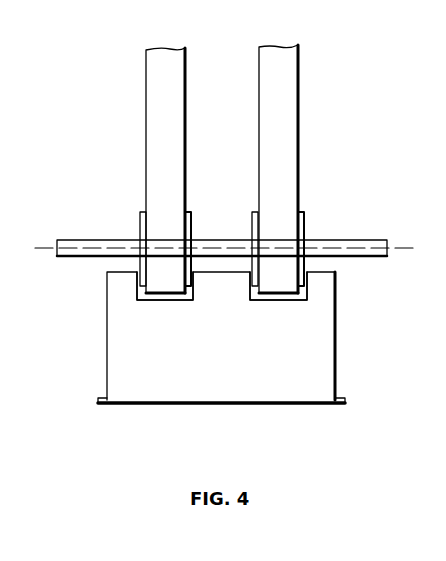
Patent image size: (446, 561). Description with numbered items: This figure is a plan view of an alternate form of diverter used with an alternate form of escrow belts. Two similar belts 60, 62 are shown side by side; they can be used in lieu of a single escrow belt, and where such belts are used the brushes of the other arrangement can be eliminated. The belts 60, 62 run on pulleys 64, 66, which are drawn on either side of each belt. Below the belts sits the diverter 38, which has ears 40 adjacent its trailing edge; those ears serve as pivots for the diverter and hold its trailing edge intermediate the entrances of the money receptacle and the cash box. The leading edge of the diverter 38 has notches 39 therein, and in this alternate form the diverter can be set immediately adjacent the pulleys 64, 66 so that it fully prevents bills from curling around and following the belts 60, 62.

The diverter 38 is at (331, 342).
The notches 39 is at (135, 289).
The ears 40 is at (106, 406).
The belt 60 is at (146, 138).
The belt 62 is at (299, 137).
The pulley 64 is at (140, 223).
The pulley 66 is at (304, 220).